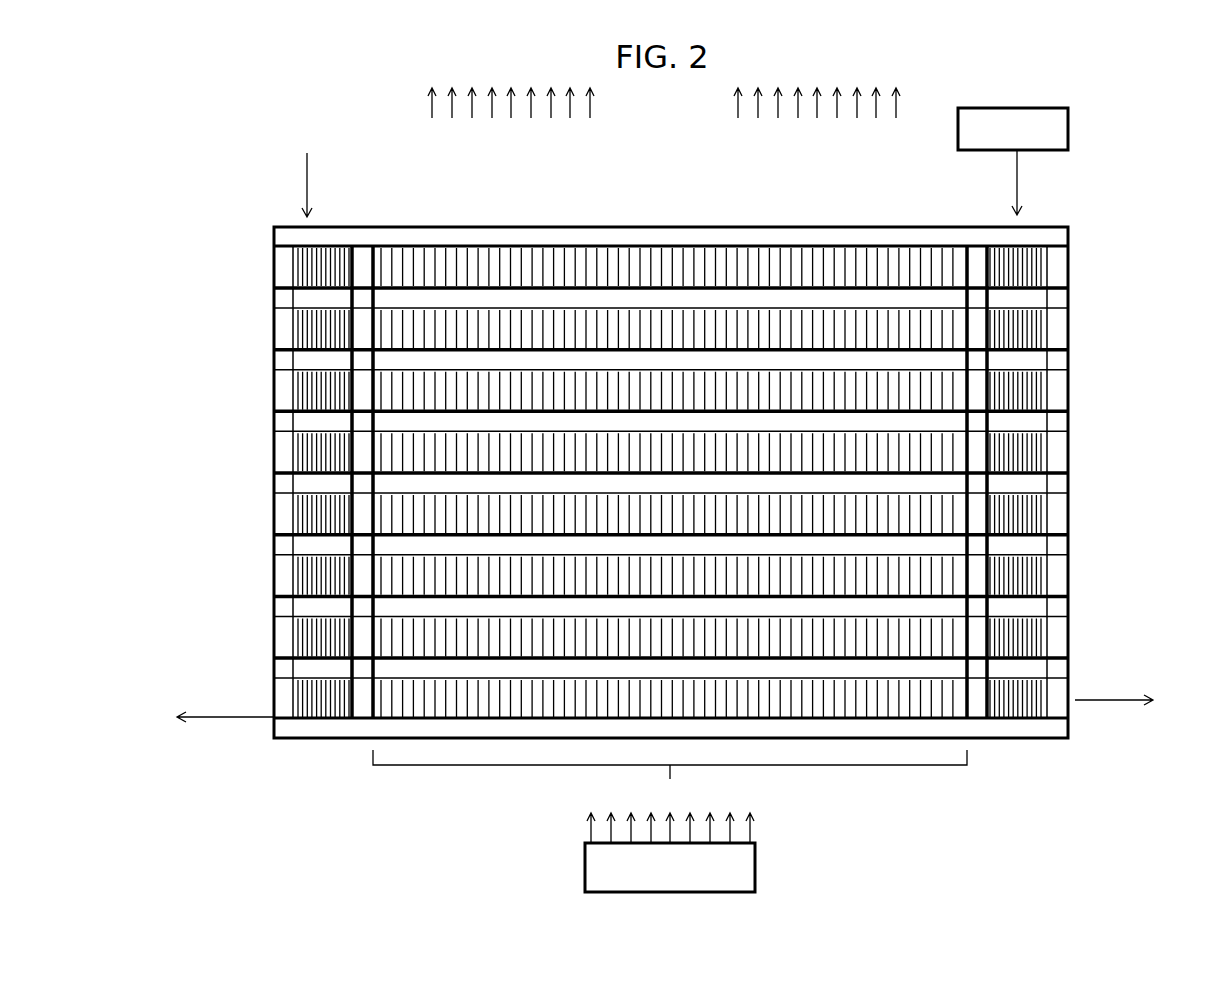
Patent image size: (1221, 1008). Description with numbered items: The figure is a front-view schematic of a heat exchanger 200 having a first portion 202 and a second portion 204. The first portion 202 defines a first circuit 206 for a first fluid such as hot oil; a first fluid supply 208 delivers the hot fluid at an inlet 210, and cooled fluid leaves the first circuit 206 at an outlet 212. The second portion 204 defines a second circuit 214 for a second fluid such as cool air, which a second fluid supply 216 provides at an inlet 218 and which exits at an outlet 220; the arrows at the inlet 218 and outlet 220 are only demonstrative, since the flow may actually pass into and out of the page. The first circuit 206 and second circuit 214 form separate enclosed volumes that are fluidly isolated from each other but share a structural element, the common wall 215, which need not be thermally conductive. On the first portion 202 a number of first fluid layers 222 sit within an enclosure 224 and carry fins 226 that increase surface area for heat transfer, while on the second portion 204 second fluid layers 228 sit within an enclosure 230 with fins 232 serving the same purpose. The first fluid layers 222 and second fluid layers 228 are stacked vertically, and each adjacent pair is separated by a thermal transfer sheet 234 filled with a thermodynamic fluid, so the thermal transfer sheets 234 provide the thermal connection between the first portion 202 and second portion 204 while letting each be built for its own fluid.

The heat exchanger 200 is at (258, 200).
The first portion 202 is at (274, 750).
The second portion 204 is at (373, 750).
The first circuit 206 is at (967, 750).
The first fluid supply 208 is at (1035, 143).
The inlet 210 is at (684, 183).
The outlet 212 is at (665, 697).
The second circuit 214 is at (670, 781).
The common wall 215 is at (375, 270).
The second fluid supply 216 is at (670, 867).
The inlet 218 is at (750, 838).
The outlet 220 is at (664, 117).
The first fluid layers 222 is at (274, 326).
The enclosure 224 is at (1027, 243).
The fins 226 is at (312, 392).
The second fluid layers 228 is at (585, 322).
The enclosure 230 is at (720, 245).
The fins 232 is at (848, 328).
The thermal transfer sheet 234 is at (283, 548).